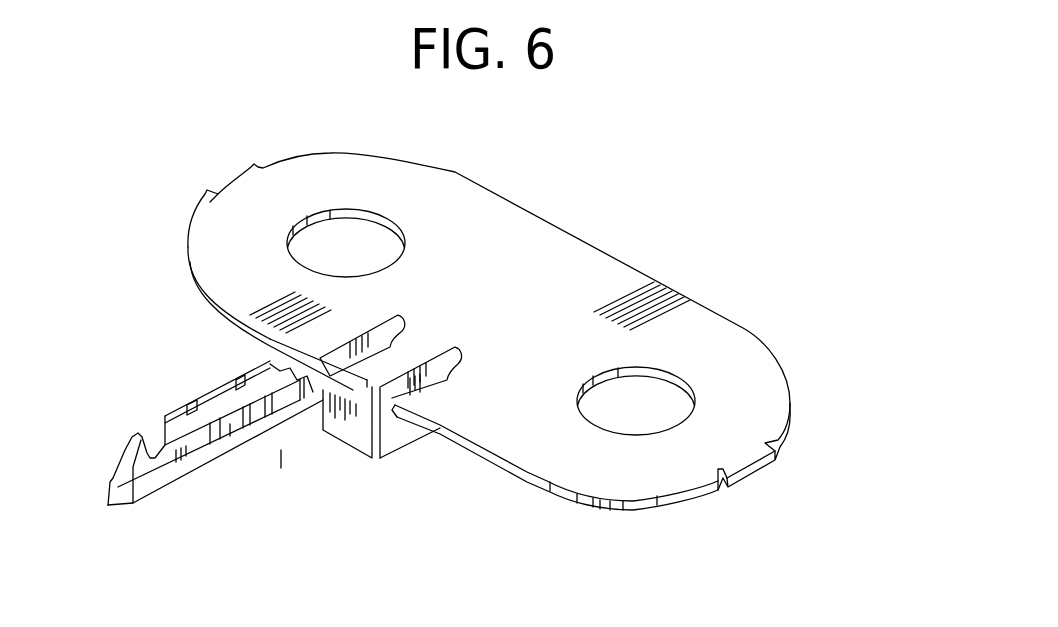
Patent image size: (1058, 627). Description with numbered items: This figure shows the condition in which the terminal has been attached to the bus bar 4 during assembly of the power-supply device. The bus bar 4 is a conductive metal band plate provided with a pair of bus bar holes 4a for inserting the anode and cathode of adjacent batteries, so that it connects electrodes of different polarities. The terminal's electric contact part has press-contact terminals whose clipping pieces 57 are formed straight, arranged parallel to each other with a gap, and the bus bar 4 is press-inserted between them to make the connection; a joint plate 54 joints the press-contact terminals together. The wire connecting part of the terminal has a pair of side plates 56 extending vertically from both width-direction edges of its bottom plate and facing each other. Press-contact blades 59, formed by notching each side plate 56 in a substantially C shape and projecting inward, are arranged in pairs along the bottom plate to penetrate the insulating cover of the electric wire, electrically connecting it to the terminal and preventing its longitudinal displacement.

The bus bar 4 is at (560, 260).
The bus bar hole 4a is at (353, 222).
The joint plate 54 is at (354, 430).
The side plate 56 is at (283, 405).
The clipping piece 57 is at (405, 344).
The press-contact blade 59 is at (242, 386).